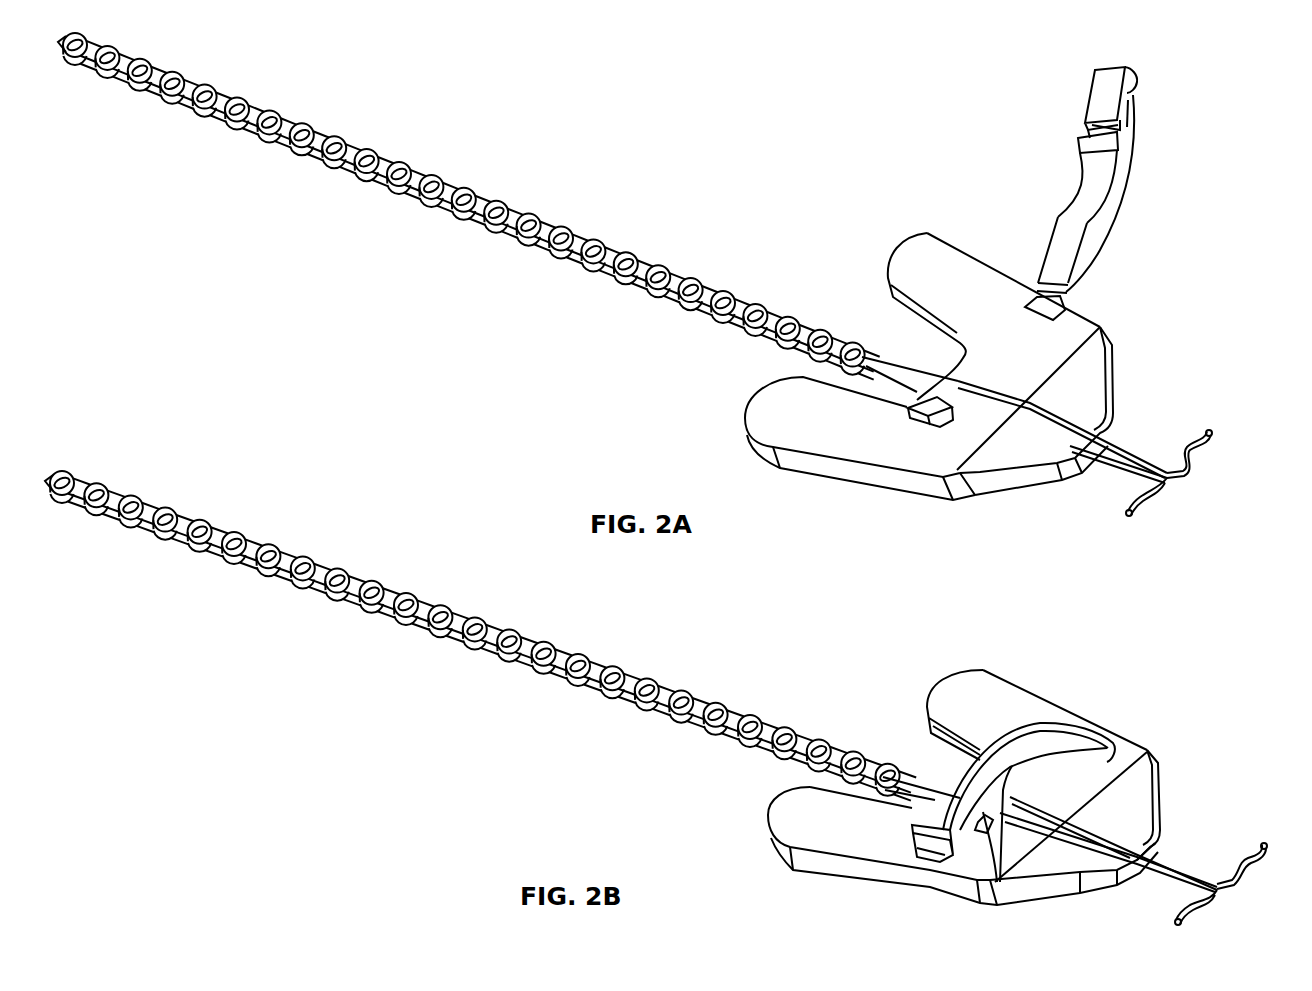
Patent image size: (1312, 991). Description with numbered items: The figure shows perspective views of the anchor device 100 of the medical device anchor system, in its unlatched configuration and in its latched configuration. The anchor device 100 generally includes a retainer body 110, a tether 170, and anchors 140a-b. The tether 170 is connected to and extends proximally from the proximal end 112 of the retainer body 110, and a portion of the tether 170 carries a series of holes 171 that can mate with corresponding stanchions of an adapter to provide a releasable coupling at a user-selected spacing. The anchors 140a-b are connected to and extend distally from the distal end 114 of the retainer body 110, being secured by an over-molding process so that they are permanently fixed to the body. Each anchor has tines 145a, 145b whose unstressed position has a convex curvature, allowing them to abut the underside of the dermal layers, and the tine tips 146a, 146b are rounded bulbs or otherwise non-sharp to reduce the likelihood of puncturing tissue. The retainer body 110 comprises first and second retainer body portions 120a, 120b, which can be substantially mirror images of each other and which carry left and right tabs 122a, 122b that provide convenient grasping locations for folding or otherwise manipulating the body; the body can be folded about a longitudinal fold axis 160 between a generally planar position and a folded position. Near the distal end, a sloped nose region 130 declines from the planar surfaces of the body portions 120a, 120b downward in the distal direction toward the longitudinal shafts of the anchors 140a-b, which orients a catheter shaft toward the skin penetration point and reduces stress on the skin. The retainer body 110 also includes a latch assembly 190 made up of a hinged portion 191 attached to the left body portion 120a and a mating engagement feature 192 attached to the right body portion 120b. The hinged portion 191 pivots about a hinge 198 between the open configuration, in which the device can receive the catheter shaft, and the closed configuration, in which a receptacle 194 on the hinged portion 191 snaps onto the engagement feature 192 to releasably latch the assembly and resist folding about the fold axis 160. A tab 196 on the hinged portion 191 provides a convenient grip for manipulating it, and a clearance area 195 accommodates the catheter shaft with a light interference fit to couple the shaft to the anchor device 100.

In FIG. 2A, the anchor device 100 is at (868, 135).
In FIG. 2B, the anchor device 100 is at (1136, 656).
In FIG. 2A, the retainer body 110 is at (933, 376).
In FIG. 2B, the retainer body 110 is at (954, 795).
In FIG. 2A, the proximal end 112 is at (920, 395).
In FIG. 2A, the distal end 114 is at (1095, 428).
In FIG. 2A, the first retainer body portion 120a is at (956, 300).
In FIG. 2B, the first retainer body portion 120a is at (991, 707).
In FIG. 2A, the second retainer body portion 120b is at (817, 459).
In FIG. 2B, the second retainer body portion 120b is at (917, 843).
In FIG. 2A, the left tab 122a is at (985, 236).
In FIG. 2B, the left tab 122a is at (930, 702).
In FIG. 2A, the right tab 122b is at (750, 403).
In FIG. 2B, the right tab 122b is at (768, 812).
In FIG. 2A, the sloped nose region 130 is at (1100, 382).
In FIG. 2B, the sloped nose region 130 is at (1140, 782).
In FIG. 2A, the anchors 140a-b is at (1120, 462).
In FIG. 2B, the anchors 140a-b is at (1089, 864).
In FIG. 2A, the tine 145a is at (1225, 436).
In FIG. 2B, the tine 145a is at (1237, 837).
In FIG. 2A, the tine 145b is at (1181, 511).
In FIG. 2B, the tine 145b is at (1235, 920).
In FIG. 2A, the tine tip 146a is at (1208, 432).
In FIG. 2B, the tine tip 146a is at (1268, 812).
In FIG. 2A, the tine tip 146b is at (1168, 511).
In FIG. 2B, the tine tip 146b is at (1185, 920).
In FIG. 2A, the longitudinal fold axis 160 is at (977, 385).
In FIG. 2B, the longitudinal fold axis 160 is at (1046, 820).
In FIG. 2A, the tether 170 is at (450, 206).
In FIG. 2B, the tether 170 is at (480, 636).
In FIG. 2A, the holes 171 is at (95, 62).
In FIG. 2B, the holes 171 is at (170, 520).
In FIG. 2A, the latch assembly 190 is at (1118, 182).
In FIG. 2B, the latch assembly 190 is at (990, 812).
In FIG. 2A, the hinged portion 191 is at (1118, 225).
In FIG. 2A, the engagement feature 192 is at (907, 411).
In FIG. 2B, the engagement feature 192 is at (985, 835).
In FIG. 2A, the receptacle 194 is at (1087, 140).
In FIG. 2A, the clearance area 195 is at (1078, 185).
In FIG. 2B, the clearance area 195 is at (1000, 885).
In FIG. 2A, the tab 196 is at (1143, 80).
In FIG. 2B, the tab 196 is at (913, 838).
In FIG. 2A, the hinge 198 is at (1070, 290).